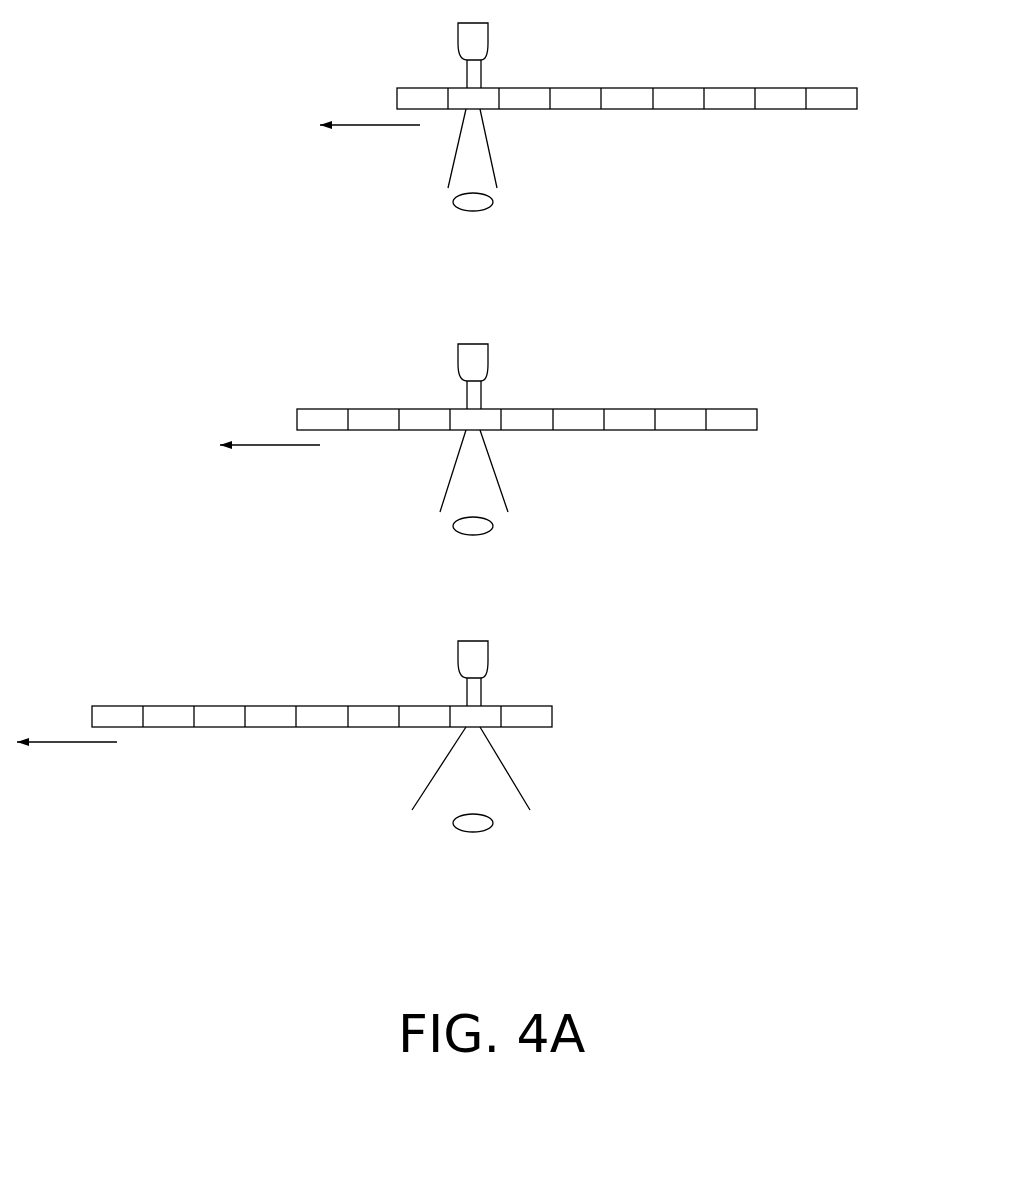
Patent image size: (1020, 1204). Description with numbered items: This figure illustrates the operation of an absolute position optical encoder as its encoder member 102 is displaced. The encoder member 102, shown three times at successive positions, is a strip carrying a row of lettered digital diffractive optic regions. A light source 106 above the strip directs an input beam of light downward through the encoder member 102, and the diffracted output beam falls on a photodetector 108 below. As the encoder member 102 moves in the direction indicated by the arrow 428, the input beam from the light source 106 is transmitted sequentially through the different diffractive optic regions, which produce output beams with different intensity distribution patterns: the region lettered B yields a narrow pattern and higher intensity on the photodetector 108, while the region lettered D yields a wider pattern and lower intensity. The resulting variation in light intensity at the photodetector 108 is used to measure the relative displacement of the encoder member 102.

The encoder member 102 is at (818, 67).
The light source 106 is at (488, 35).
The photodetector 108 is at (493, 201).
The arrow 428 is at (367, 128).